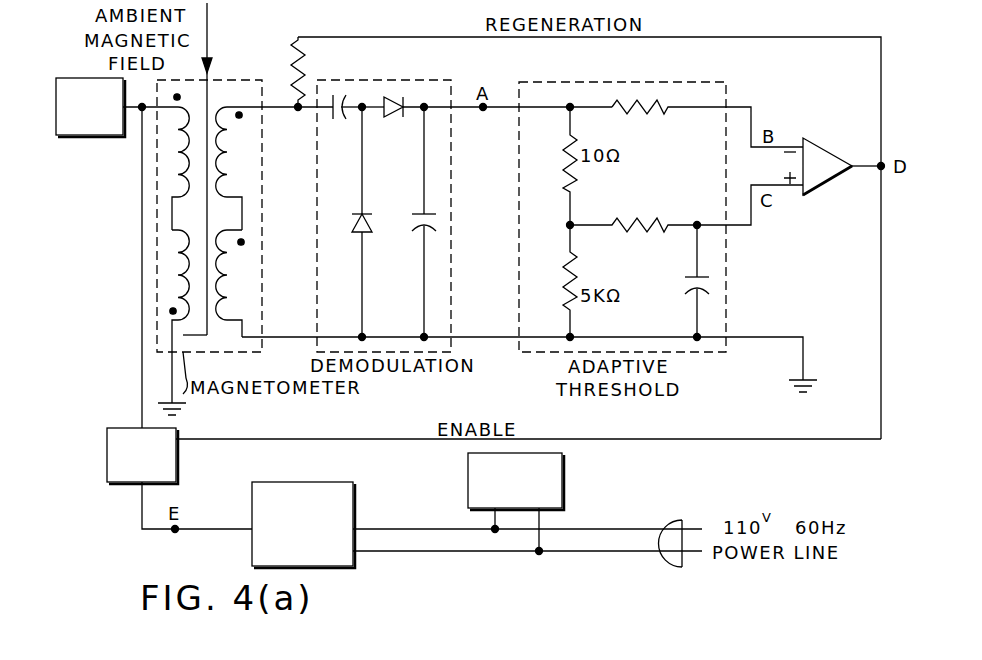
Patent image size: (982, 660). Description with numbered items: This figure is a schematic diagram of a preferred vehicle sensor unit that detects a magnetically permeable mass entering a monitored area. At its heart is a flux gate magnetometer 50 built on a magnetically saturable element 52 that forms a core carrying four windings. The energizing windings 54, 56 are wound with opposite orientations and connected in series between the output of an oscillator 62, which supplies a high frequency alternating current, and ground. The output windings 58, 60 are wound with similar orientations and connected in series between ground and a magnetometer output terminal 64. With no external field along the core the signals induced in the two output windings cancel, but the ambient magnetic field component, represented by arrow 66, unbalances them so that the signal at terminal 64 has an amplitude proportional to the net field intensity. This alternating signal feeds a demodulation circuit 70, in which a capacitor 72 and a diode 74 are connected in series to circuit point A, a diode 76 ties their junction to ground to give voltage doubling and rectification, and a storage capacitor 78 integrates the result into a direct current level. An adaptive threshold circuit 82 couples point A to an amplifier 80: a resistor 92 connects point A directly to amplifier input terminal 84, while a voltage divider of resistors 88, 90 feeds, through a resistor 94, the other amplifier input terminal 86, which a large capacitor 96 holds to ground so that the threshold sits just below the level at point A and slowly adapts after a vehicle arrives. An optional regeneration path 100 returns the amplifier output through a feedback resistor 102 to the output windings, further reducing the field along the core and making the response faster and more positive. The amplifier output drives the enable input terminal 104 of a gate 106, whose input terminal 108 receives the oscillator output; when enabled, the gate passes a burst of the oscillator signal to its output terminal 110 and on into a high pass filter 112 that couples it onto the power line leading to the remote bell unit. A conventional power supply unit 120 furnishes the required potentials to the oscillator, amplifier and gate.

The flux gate magnetometer 50 is at (262, 352).
The magnetically saturable element 52 is at (207, 330).
The energizing winding 54 is at (175, 162).
The energizing winding 56 is at (175, 316).
The output winding 58 is at (239, 168).
The output winding 60 is at (237, 283).
The oscillator 62 is at (92, 135).
The magnetometer output terminal 64 is at (284, 108).
The net magnetic field intensity component 66 is at (210, 33).
The demodulation circuit 70 is at (451, 352).
The capacitor 72 is at (342, 116).
The diode 74 is at (392, 116).
The diode 76 is at (366, 232).
The storage capacitor 78 is at (420, 212).
The amplifier 80 is at (826, 152).
The adaptive threshold circuit 82 is at (726, 352).
The amplifier input terminal 84 is at (803, 140).
The amplifier input terminal 86 is at (804, 194).
The resistor 88 is at (566, 144).
The resistor 90 is at (566, 260).
The resistor 92 is at (660, 108).
The resistor 94 is at (660, 226).
The capacitor 96 is at (712, 286).
The regeneration path 100 is at (826, 37).
The feedback resistor 102 is at (302, 70).
The enable input terminal 104 is at (808, 440).
The gate 106 is at (178, 478).
The input terminal 108 is at (142, 349).
The output terminal 110 is at (142, 507).
The high pass filter 112 is at (354, 490).
The power supply unit 120 is at (564, 468).